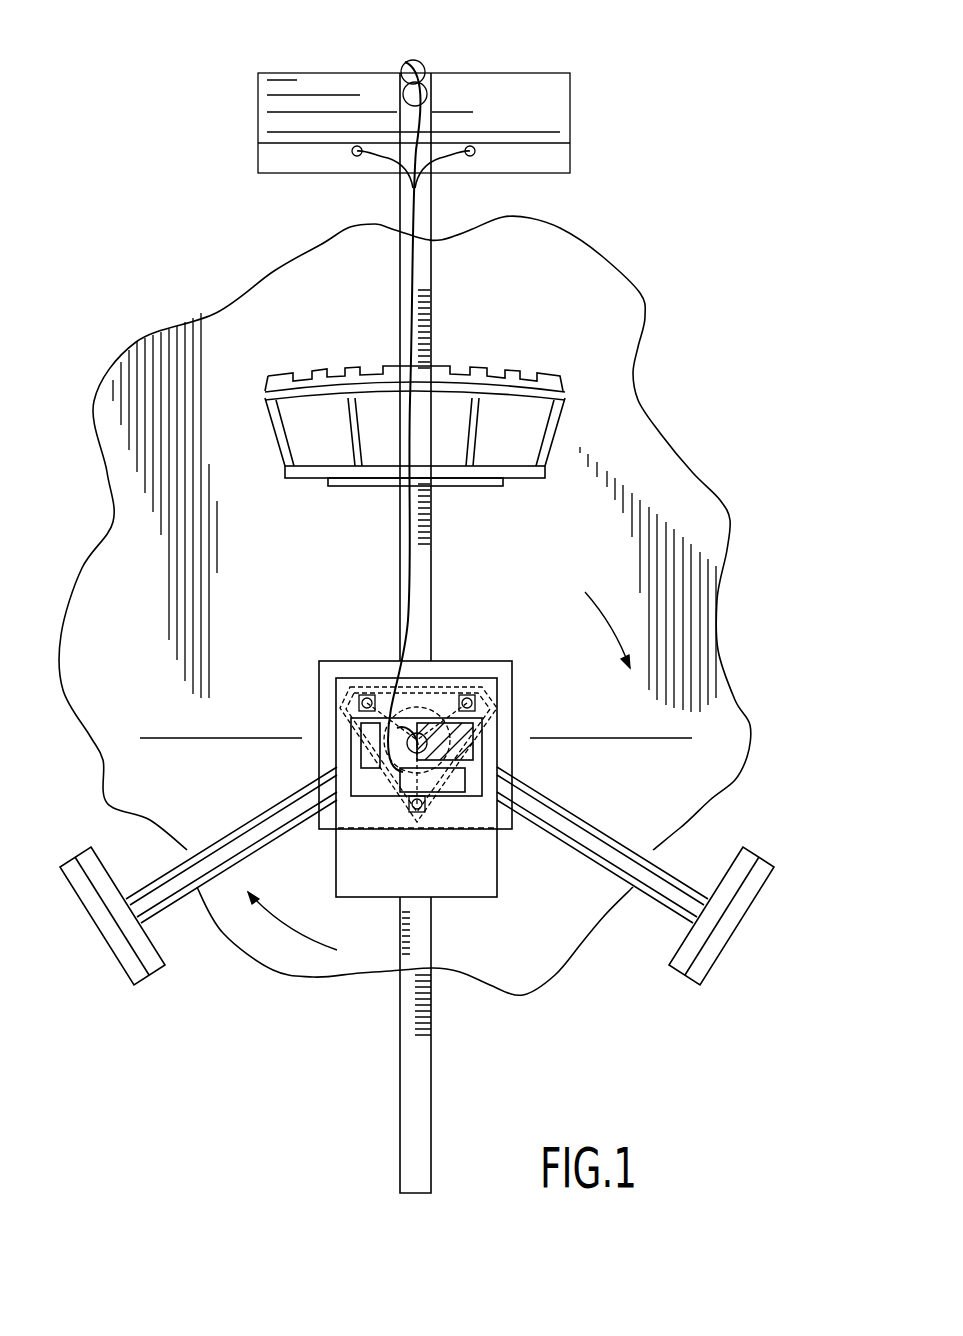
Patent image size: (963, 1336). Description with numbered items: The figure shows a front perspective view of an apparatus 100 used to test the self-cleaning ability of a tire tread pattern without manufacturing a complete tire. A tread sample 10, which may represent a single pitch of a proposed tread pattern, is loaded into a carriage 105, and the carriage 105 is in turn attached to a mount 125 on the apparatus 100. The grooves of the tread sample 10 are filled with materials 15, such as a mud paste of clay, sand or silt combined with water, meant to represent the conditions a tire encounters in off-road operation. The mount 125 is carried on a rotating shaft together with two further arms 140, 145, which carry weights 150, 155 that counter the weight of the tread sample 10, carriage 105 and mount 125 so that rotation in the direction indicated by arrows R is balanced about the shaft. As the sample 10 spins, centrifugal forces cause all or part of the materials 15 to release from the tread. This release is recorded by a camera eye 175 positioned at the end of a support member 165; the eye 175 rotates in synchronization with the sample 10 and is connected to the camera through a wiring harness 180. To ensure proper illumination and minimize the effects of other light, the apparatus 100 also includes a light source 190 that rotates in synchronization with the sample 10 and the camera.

The apparatus 100 is at (725, 197).
The light source 190 is at (557, 108).
The camera eye 175 is at (407, 66).
The support member 165 is at (423, 207).
The materials 15 is at (498, 368).
The tread sample 10 is at (552, 380).
The carriage 105 is at (553, 445).
The mount 125 is at (463, 487).
The wiring harness 180 is at (405, 650).
The arm 145 is at (243, 827).
The arm 140 is at (592, 825).
The weight 155 is at (112, 955).
The weight 150 is at (728, 942).
The arrows indicating rotation R is at (297, 933).